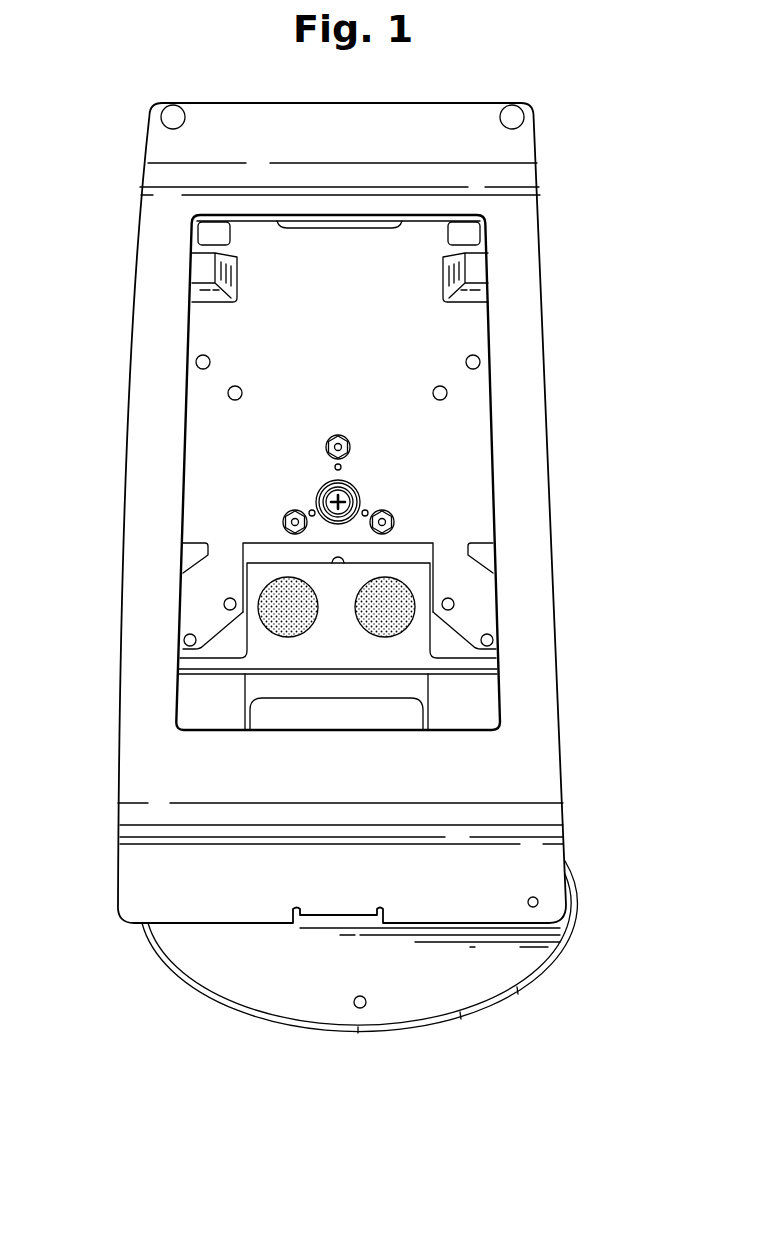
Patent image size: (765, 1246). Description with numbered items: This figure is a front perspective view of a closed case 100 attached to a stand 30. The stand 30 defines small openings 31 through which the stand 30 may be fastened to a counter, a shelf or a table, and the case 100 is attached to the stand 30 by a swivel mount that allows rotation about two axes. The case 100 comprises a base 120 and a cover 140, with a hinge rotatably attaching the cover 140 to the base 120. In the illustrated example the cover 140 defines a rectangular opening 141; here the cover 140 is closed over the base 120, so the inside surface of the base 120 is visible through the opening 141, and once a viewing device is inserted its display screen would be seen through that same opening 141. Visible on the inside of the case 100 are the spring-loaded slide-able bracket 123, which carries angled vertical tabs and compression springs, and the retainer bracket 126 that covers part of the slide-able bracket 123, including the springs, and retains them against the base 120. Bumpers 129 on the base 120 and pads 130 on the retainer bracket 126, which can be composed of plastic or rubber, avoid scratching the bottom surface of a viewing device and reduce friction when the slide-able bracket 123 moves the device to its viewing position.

The case 100 is at (548, 243).
The base 120 is at (217, 460).
The spring-loaded slide-able bracket 123 is at (425, 543).
The retainer bracket 126 is at (410, 673).
The bumpers 129 is at (205, 293).
The pads 130 is at (317, 592).
The cover 140 is at (545, 652).
The rectangular opening 141 is at (485, 392).
The stand 30 is at (500, 972).
The small openings 31 is at (367, 1002).